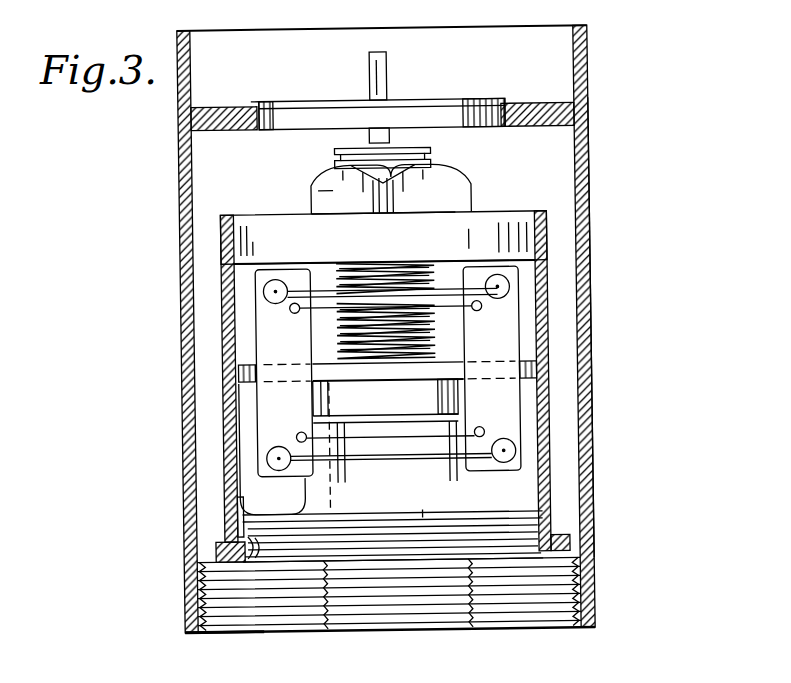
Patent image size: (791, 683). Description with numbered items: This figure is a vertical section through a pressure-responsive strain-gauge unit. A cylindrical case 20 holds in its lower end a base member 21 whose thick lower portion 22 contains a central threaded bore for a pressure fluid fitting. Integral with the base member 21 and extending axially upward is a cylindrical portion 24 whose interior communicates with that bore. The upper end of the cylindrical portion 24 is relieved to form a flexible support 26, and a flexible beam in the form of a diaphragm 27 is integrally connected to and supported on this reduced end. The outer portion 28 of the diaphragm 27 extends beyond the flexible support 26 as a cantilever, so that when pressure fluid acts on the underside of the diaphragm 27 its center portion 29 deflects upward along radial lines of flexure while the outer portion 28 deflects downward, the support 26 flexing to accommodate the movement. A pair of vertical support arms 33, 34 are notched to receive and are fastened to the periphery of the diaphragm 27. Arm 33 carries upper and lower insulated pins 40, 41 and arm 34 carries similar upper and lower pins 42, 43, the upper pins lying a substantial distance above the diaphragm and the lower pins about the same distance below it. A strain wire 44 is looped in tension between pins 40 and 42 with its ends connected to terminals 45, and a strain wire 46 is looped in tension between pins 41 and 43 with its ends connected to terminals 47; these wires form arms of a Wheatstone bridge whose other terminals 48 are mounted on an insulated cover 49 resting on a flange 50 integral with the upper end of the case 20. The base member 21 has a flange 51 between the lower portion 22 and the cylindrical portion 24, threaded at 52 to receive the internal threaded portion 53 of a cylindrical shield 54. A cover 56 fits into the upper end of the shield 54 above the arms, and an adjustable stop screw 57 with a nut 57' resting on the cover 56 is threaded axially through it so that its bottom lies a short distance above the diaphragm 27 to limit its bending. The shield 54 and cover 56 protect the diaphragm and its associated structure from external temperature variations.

The cylindrical case 20 is at (176, 172).
The base member 21 is at (200, 635).
The lower portion 22 is at (218, 578).
The cylindrical portion 24 is at (390, 507).
The flexible support 26 is at (454, 392).
The diaphragm 27 is at (356, 392).
The outer portion of the diaphragm 28 is at (243, 361).
The center portion of the diaphragm 29 is at (392, 396).
The support arm 33 is at (258, 322).
The support arm 34 is at (521, 320).
The upper insulated pin 40 is at (296, 312).
The lower insulated pin 41 is at (300, 432).
The upper insulated pin 42 is at (478, 312).
The lower insulated pin 43 is at (480, 430).
The strain wire 44 is at (440, 318).
The terminal 45 is at (264, 288).
The strain wire 46 is at (328, 462).
The terminal 47 is at (278, 470).
The terminal 48 is at (382, 52).
The insulated cover 49 is at (441, 100).
The flange 50 is at (246, 80).
The flange 51 is at (420, 514).
The threaded periphery 52 is at (241, 513).
The internal threaded portion 53 is at (240, 530).
The cylindrical shield 54 is at (549, 391).
The cover 56 is at (266, 230).
The adjustable stop screw 57 is at (397, 180).
The nut 57' is at (298, 182).